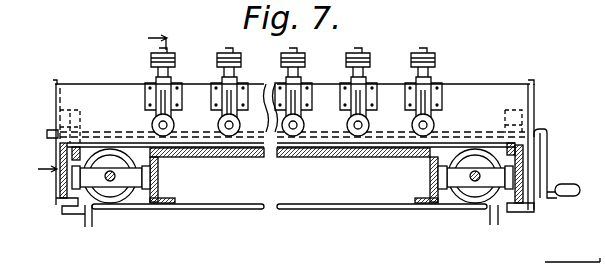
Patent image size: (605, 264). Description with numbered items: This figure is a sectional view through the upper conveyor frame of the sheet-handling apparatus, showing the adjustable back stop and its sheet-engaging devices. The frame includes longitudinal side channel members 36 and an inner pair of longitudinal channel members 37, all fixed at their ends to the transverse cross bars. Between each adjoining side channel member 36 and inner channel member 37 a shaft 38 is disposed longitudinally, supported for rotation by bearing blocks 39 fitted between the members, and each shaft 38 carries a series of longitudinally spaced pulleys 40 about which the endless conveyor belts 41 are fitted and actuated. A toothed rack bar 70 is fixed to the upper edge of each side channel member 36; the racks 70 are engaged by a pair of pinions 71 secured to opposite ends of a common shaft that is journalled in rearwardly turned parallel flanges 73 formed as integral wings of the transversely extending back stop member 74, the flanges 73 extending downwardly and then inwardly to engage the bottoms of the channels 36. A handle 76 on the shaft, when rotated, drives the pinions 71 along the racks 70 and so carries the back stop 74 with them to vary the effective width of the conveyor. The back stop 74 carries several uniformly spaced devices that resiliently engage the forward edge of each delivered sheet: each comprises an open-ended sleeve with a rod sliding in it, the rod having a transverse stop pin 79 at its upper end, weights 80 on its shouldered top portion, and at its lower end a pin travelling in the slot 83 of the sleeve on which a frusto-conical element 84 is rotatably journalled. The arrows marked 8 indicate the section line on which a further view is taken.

The section line 8— 8 is at (110, 111).
The longitudinal side channel member 36 is at (64, 208).
The longitudinal channel member 37 is at (158, 179).
The shaft 38 is at (111, 184).
The bearing block 39 is at (98, 190).
The pulley 40 is at (122, 194).
The endless conveyor belt 41 is at (233, 210).
The toothed rack bar 70 is at (70, 148).
The pinion 71 is at (72, 112).
The flange 73 is at (55, 86).
The back stop member 74 is at (485, 95).
The handle 76 is at (548, 160).
The stop pin 79 is at (233, 70).
The weight 80 is at (347, 63).
The slot 83 is at (156, 105).
The frusto-conical element 84 is at (174, 128).